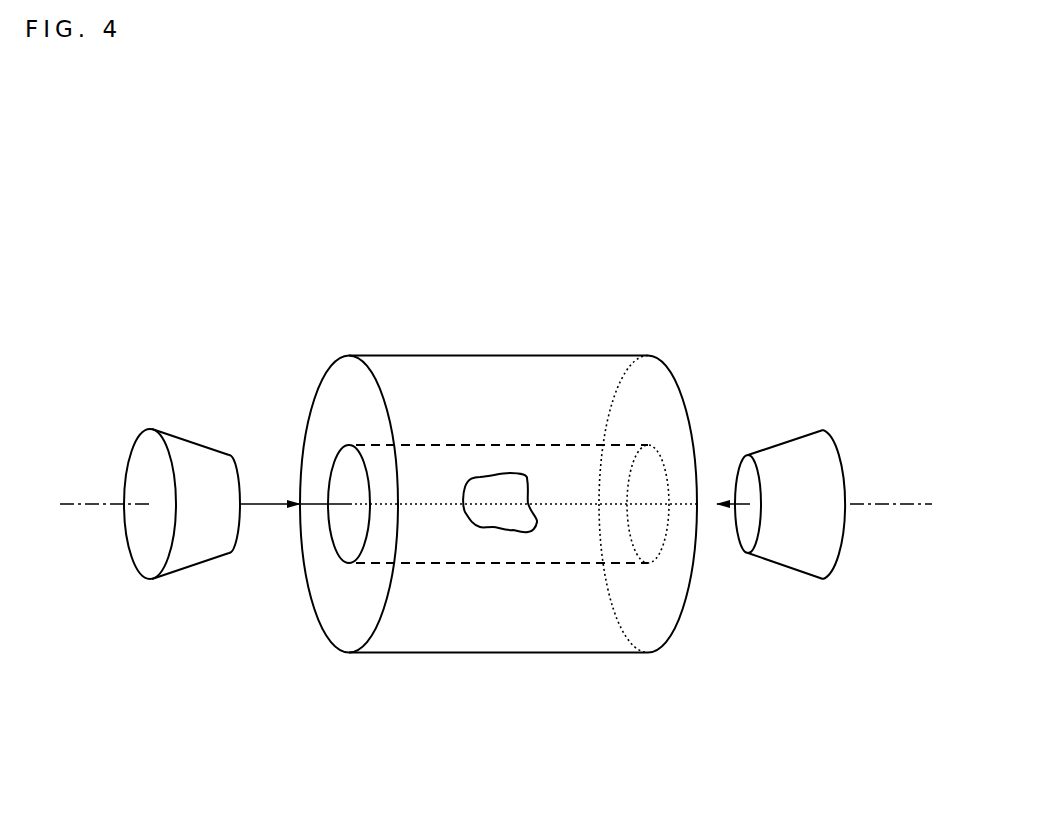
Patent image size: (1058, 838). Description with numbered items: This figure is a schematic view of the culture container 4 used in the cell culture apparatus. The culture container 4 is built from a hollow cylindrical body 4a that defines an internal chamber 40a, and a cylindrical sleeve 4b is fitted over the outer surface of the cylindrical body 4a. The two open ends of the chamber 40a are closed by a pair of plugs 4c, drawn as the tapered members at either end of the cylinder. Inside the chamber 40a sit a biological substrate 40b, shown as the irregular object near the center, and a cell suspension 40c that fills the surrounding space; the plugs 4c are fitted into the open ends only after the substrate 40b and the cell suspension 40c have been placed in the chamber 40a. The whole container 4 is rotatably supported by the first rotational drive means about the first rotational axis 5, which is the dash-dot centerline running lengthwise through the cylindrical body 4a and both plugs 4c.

The culture container 4 is at (340, 322).
The hollow cylindrical body 4a is at (450, 355).
The cylindrical sleeve 4b is at (402, 653).
The plug 4c is at (183, 443).
The first rotational axis 5 is at (880, 502).
The chamber 40a is at (520, 563).
The biological substrate 40b is at (505, 475).
The cell suspension 40c is at (557, 493).